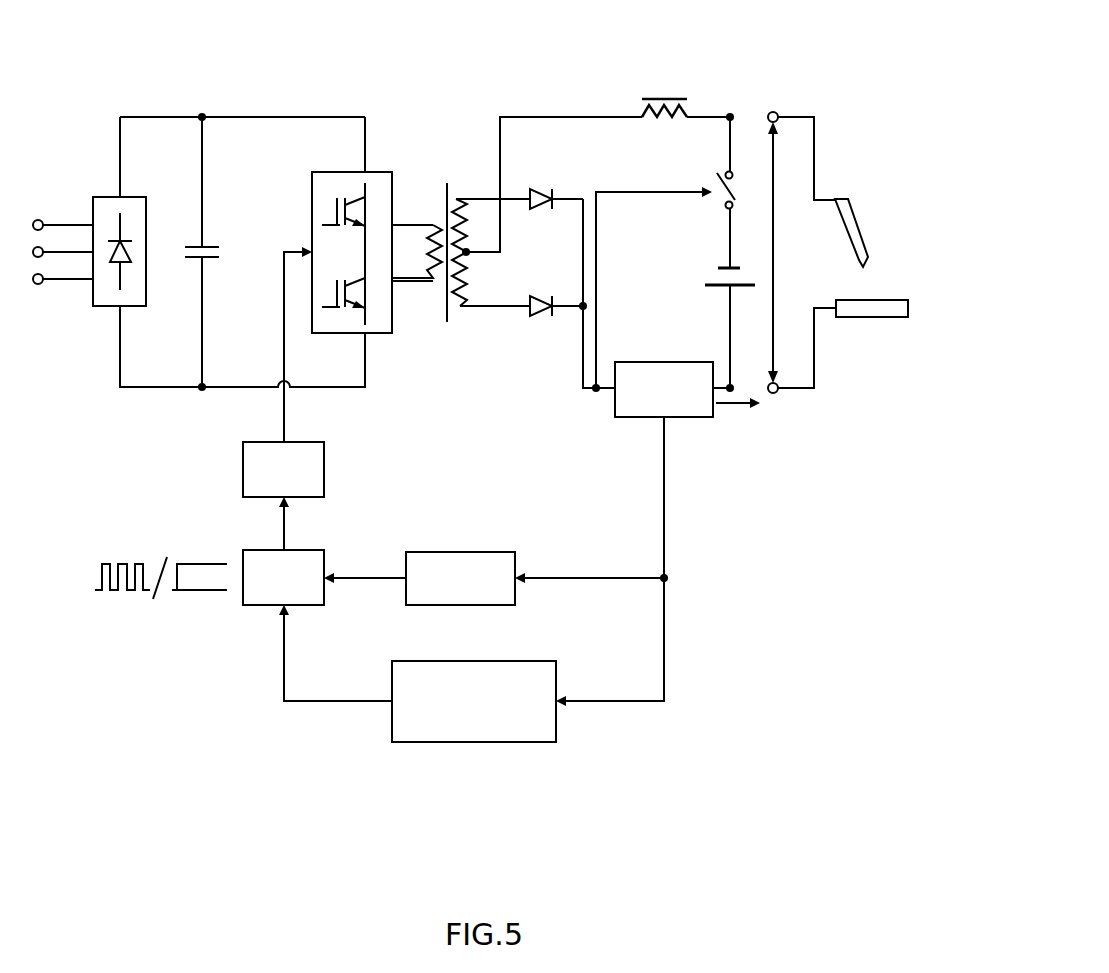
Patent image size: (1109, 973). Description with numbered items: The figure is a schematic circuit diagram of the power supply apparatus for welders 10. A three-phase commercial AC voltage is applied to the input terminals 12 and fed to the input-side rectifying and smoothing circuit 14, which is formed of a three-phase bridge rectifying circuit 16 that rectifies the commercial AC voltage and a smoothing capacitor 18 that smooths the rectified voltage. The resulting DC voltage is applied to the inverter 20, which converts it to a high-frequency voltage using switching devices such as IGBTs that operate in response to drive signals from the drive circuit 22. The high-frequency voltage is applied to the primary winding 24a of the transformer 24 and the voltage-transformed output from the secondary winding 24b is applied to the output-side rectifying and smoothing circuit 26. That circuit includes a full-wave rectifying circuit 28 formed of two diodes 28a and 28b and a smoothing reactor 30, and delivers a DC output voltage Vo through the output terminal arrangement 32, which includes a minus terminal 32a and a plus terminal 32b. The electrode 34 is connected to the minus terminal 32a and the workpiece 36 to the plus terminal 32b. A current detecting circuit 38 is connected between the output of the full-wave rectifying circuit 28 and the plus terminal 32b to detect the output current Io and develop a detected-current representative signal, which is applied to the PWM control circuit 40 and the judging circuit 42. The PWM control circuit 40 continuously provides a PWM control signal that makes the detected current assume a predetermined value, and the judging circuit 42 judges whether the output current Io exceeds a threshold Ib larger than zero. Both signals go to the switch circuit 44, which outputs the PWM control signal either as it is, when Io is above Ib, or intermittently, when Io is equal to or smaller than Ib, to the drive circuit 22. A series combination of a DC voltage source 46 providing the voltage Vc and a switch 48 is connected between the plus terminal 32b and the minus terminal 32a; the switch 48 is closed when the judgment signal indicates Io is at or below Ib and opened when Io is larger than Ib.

The power supply apparatus for welders 10 is at (459, 61).
The input terminals 12 is at (50, 215).
The input-side rectifying and smoothing circuit 14 is at (173, 171).
The three-phase bridge rectifying circuit 16 is at (103, 197).
The smoothing capacitor 18 is at (206, 246).
The inverter 20 is at (310, 197).
The drive circuit 22 is at (243, 470).
The transformer 24 is at (458, 174).
The primary winding 24a is at (436, 280).
The secondary winding 24b is at (458, 308).
The output-side rectifying and smoothing circuit 26 is at (621, 171).
The full-wave rectifying circuit 28 is at (555, 268).
The diode 28a is at (541, 189).
The diode 28b is at (541, 317).
The smoothing reactor 30 is at (664, 97).
The output terminal arrangement 32 is at (765, 106).
The minus terminal 32a is at (777, 110).
The plus terminal 32b is at (777, 394).
The electrode 34 is at (862, 220).
The workpiece 36 is at (874, 318).
The current detecting circuit 38 is at (664, 361).
The PWM control circuit 40 is at (472, 743).
The judging circuit 42 is at (462, 551).
The switch circuit 44 is at (256, 607).
The DC voltage source 46 is at (712, 278).
The switch 48 is at (738, 186).